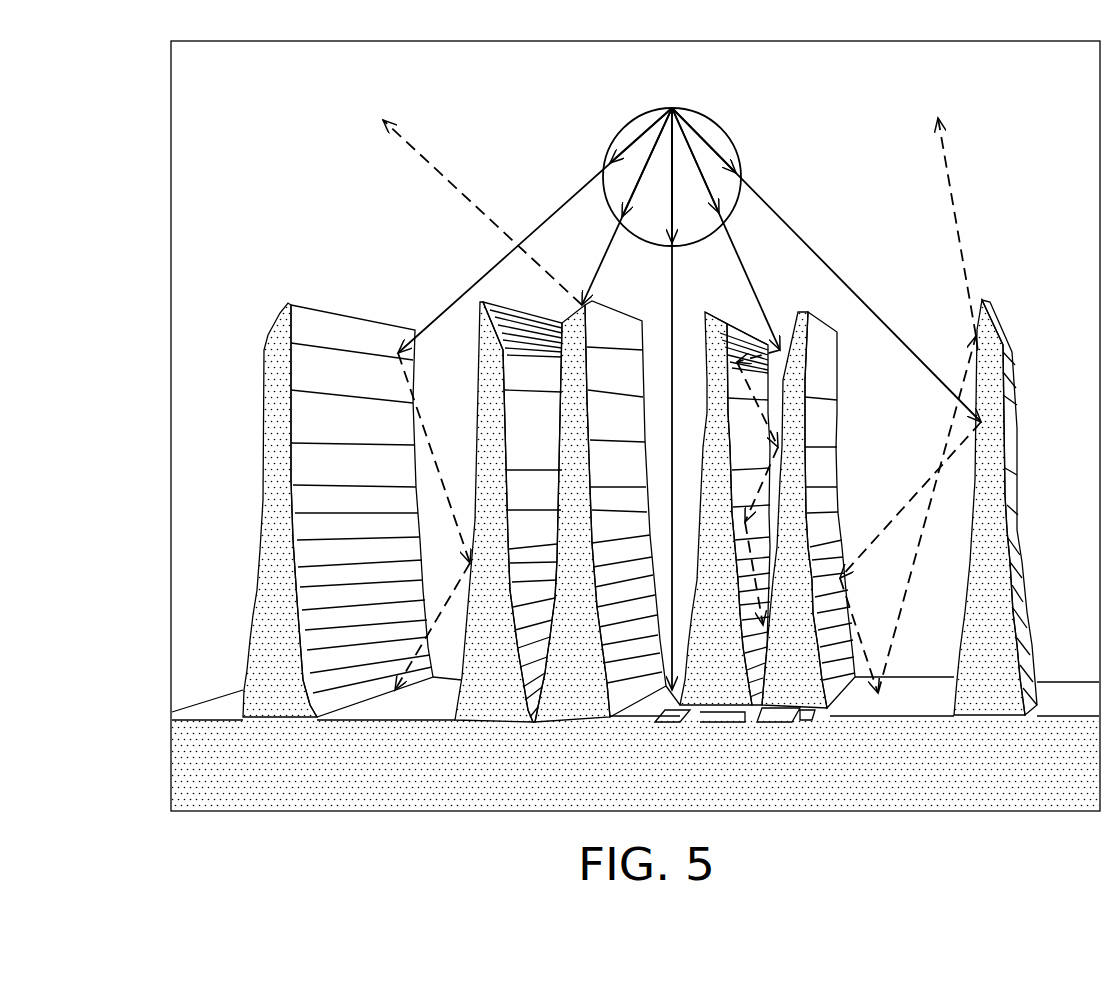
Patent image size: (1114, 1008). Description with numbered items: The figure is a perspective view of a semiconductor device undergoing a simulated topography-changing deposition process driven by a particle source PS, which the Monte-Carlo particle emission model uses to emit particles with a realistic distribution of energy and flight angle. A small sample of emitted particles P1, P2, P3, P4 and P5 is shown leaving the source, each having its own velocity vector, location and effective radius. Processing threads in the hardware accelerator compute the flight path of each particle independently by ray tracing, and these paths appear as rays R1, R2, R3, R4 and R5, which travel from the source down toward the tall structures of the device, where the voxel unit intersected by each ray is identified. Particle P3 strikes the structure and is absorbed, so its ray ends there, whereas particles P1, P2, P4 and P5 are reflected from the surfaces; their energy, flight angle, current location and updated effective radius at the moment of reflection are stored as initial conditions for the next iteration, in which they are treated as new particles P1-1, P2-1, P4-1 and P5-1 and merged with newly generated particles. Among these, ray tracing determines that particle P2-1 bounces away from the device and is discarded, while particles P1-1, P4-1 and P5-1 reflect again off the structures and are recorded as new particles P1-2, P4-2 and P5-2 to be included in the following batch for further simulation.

The particle source PS is at (711, 112).
The ray R1 is at (535, 230).
The ray R2 is at (601, 262).
The ray R3 is at (674, 268).
The ray R4 is at (750, 282).
The ray R5 is at (801, 238).
The particle P1 is at (642, 137).
The particle P2 is at (640, 176).
The particle P3 is at (669, 212).
The particle P4 is at (706, 185).
The particle P5 is at (724, 158).
The new particle P1-1 is at (400, 449).
The new particle P1-2 is at (467, 622).
The new particle P2-1 is at (495, 237).
The new particle P4-1 is at (789, 351).
The new particle P4-2 is at (730, 493).
The new particle P5-1 is at (942, 494).
The new particle P5-2 is at (879, 405).